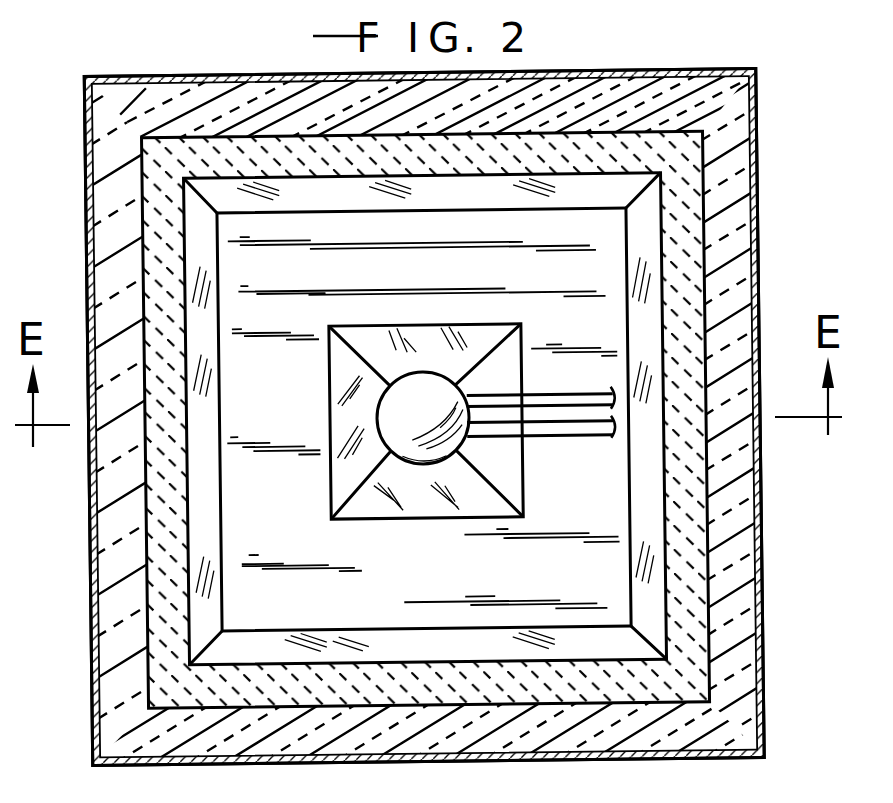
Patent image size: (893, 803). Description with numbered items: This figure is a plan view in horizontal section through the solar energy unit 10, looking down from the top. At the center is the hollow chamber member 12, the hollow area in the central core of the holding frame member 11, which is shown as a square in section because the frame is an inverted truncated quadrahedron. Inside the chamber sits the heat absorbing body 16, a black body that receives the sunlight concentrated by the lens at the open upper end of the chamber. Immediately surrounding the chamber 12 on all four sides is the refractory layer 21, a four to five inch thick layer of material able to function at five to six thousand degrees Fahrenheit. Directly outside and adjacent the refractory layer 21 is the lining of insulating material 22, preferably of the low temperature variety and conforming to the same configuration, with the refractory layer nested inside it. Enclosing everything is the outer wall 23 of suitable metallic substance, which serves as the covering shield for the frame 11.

The solar energy unit 10 is at (778, 222).
The holding frame member 11 is at (196, 66).
The hollow chamber member 12 is at (610, 310).
The heat absorbing body 16 is at (428, 462).
The refractory layer 21 is at (170, 528).
The lining of insulating material 22 is at (117, 605).
The outer wall 23 is at (92, 703).